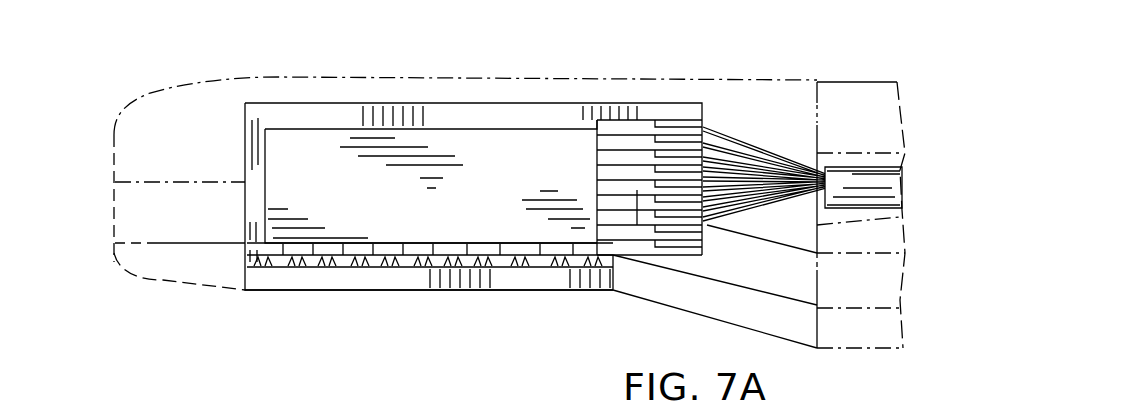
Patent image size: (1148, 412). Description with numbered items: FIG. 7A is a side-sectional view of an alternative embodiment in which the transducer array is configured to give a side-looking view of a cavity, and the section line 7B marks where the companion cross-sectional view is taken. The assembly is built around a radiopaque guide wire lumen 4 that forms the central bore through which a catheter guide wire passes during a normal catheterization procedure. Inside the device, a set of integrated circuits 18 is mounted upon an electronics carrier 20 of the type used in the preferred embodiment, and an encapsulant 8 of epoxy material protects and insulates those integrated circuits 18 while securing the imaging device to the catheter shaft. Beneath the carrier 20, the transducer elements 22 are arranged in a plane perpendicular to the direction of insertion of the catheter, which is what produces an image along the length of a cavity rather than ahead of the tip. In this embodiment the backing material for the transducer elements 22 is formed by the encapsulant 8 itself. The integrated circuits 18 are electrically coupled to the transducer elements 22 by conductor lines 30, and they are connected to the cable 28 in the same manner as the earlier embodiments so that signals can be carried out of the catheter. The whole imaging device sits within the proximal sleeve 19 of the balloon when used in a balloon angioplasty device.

The radiopaque guide wire lumen 4 is at (157, 243).
The encapsulant 8 is at (650, 87).
The integrated circuits 18 is at (422, 140).
The proximal sleeve 19 is at (857, 87).
The electronics carrier 20 is at (340, 117).
The transducer elements 22 is at (487, 293).
The cable 28 is at (850, 170).
The conductor lines 30 is at (413, 266).
The section line 7B is at (343, 50).